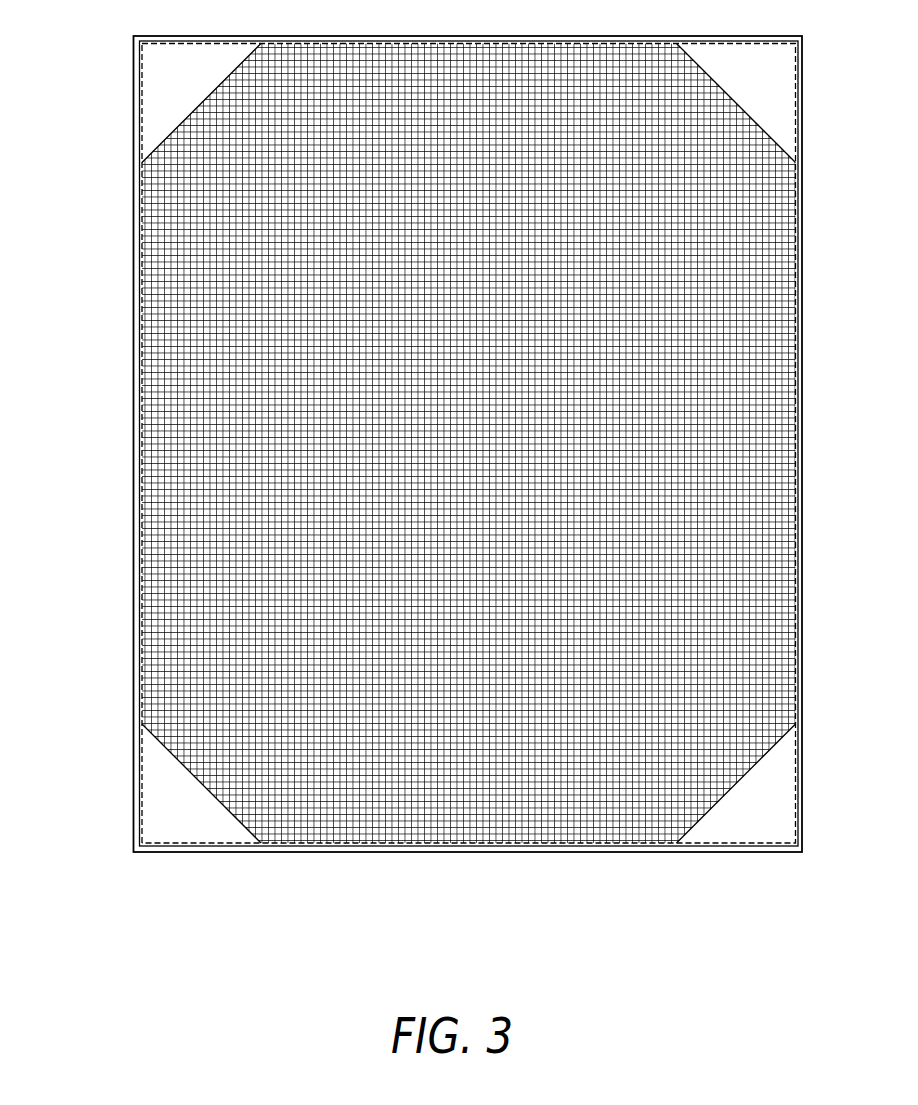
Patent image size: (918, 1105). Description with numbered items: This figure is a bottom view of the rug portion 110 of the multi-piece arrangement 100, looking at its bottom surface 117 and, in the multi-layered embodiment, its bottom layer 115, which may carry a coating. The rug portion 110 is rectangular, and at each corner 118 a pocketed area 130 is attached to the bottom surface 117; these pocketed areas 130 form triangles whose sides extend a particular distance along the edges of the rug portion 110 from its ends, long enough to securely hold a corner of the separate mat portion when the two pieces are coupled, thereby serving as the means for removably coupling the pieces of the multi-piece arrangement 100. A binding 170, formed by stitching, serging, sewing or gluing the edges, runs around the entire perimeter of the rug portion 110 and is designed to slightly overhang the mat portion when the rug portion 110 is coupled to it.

The multi-piece arrangement 100 is at (762, 893).
The rug portion 110 is at (131, 545).
The bottom layer 115 is at (131, 670).
The bottom surface 117 is at (175, 351).
The corner 118 is at (133, 808).
The pocketed area 130 is at (177, 813).
The binding 170 is at (791, 296).